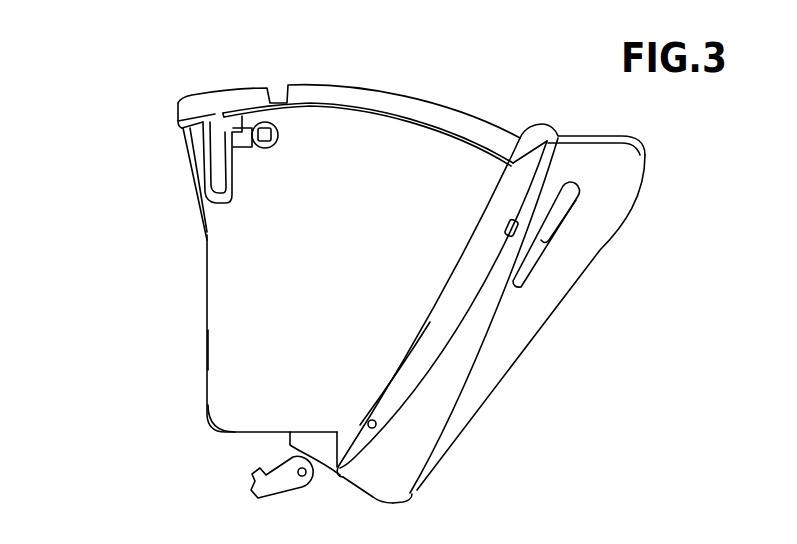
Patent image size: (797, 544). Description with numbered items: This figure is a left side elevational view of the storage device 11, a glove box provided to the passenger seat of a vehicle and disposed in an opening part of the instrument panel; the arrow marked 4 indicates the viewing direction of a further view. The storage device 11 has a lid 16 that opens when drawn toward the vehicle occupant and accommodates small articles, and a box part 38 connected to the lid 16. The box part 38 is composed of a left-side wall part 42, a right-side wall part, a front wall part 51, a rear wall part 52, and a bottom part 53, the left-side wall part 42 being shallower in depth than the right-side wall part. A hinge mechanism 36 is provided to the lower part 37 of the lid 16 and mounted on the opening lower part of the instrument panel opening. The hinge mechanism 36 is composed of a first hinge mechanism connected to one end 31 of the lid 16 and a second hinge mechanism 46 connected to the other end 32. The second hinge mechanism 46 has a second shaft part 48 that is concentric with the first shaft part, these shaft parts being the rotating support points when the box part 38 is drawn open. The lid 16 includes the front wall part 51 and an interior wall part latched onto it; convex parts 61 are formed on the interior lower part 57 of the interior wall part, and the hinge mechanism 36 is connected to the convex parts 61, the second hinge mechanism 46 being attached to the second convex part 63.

The section view direction arrow 4 is at (366, 62).
The storage device 11 is at (153, 163).
The lid 16 is at (650, 205).
The one end 31 is at (548, 332).
The other end 32 is at (437, 329).
The hinge mechanism 36 is at (212, 471).
The lower part 37 is at (372, 508).
The box part 38 is at (447, 97).
The left-side wall part 42 is at (270, 293).
The second hinge mechanism 46 is at (277, 498).
The second shaft part 48 is at (303, 481).
The front wall part 51 is at (392, 367).
The rear wall part 52 is at (208, 348).
The bottom part 53 is at (240, 436).
The interior lower part 57 is at (410, 494).
The convex parts 61 is at (327, 483).
The second convex part 63 is at (340, 454).